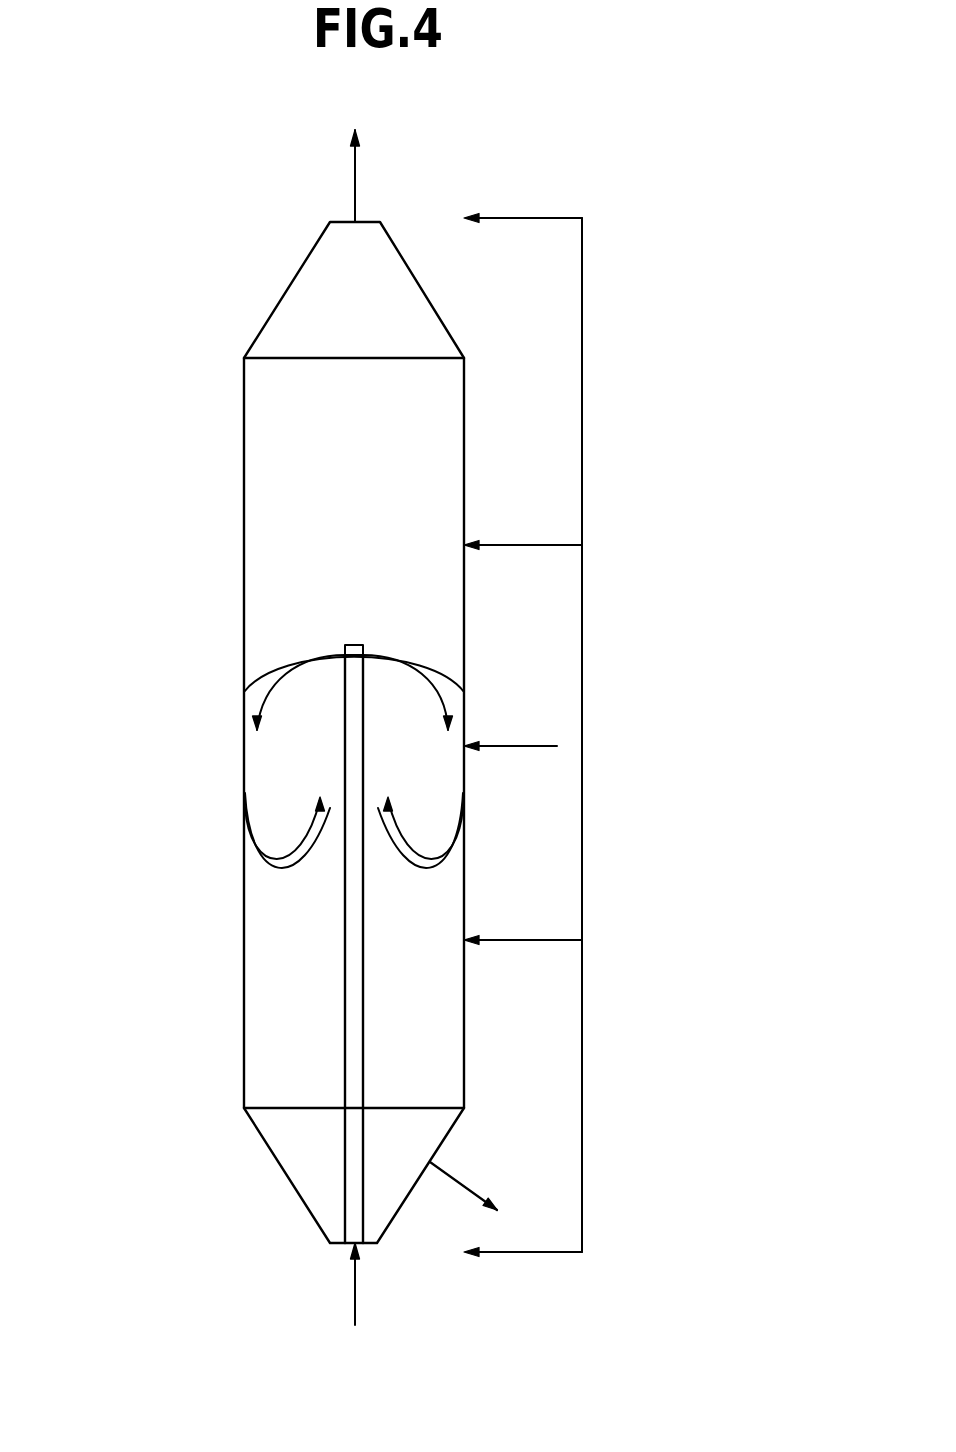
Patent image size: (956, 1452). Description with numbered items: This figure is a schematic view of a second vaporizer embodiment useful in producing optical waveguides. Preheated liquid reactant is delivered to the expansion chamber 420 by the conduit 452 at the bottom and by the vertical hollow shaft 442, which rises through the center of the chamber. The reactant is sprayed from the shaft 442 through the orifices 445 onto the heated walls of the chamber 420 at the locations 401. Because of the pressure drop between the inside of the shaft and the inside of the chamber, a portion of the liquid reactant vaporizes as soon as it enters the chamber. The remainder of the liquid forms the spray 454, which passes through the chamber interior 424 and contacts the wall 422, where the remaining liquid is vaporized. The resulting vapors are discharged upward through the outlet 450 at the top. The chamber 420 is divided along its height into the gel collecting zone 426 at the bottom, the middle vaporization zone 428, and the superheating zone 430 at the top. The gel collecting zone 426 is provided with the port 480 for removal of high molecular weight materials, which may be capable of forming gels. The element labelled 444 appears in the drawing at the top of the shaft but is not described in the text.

The expansion chamber 420 is at (233, 432).
The wall 422 is at (244, 546).
The chamber interior 424 is at (272, 980).
The gel collecting zone 426 is at (582, 1077).
The middle vaporization zone 428 is at (582, 746).
The superheating zone 430 is at (582, 346).
The vertical hollow shaft 442 is at (357, 1023).
The tube outlet 444 is at (338, 643).
The orifices 445 is at (363, 658).
The outlet 450 is at (355, 180).
The conduit 452 is at (355, 1287).
The spray 454 is at (288, 674).
The locations 401 is at (244, 776).
The port 480 is at (455, 1172).